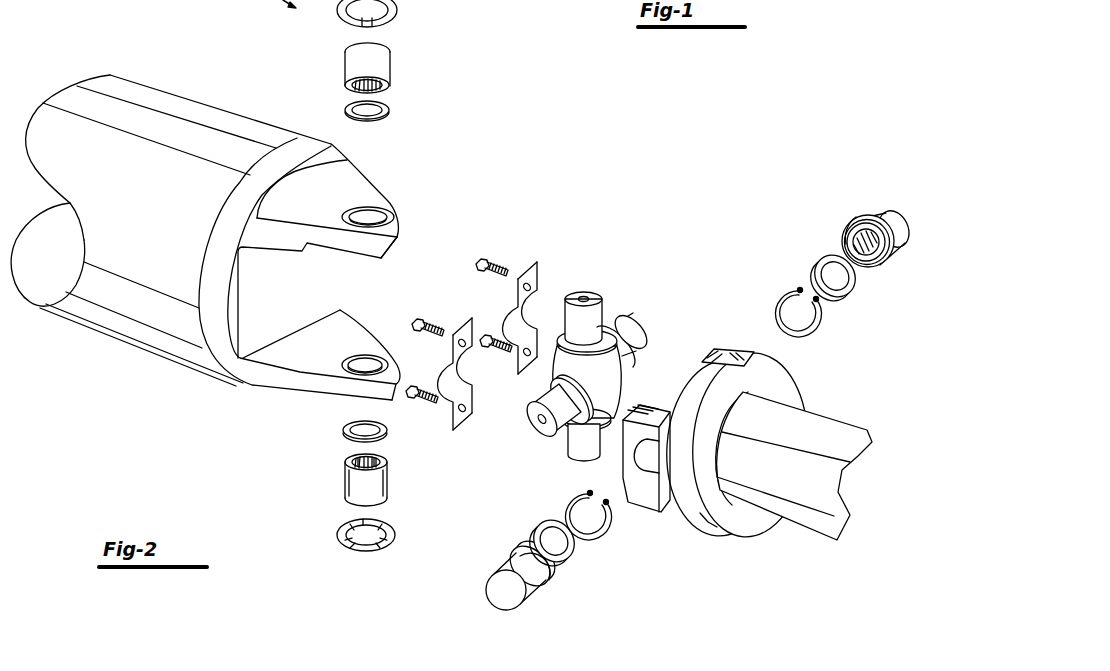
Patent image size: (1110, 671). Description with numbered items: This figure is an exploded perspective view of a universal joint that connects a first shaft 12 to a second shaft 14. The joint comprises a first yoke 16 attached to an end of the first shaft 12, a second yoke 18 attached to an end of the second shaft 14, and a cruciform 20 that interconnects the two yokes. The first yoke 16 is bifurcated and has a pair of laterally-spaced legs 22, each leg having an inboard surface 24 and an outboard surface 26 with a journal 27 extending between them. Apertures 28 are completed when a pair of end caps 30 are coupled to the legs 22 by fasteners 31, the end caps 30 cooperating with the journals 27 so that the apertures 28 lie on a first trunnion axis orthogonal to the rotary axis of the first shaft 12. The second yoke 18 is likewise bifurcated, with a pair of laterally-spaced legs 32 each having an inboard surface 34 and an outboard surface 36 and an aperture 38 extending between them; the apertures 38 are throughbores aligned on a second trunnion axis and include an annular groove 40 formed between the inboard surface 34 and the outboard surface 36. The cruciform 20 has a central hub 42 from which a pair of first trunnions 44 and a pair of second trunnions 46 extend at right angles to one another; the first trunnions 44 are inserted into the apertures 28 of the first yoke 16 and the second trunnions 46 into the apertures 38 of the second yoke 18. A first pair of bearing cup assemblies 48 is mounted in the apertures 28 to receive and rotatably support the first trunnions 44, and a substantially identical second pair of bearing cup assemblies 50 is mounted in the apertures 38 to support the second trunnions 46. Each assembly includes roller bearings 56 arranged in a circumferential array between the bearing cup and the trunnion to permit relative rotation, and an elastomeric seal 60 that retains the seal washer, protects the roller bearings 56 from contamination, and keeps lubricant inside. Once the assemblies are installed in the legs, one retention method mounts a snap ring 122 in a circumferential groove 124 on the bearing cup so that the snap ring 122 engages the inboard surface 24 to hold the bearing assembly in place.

The first shaft 12 is at (811, 420).
The second shaft 14 is at (163, 124).
The first yoke 16 is at (737, 430).
The second yoke 18 is at (278, 239).
The cruciform 20 is at (587, 366).
The legs 22 is at (708, 347).
The inboard surface 24 is at (702, 349).
The outboard surface 26 is at (718, 349).
The journal 27 is at (623, 470).
The apertures 28 is at (640, 467).
The end caps 30 is at (470, 324).
The fasteners 31 is at (418, 322).
The legs 32 is at (346, 247).
The inboard surface 34 is at (378, 377).
The outboard surface 36 is at (350, 190).
The apertures 38 is at (384, 222).
The annular groove 40 is at (383, 212).
The central hub 42 is at (607, 368).
The first trunnions 44 is at (628, 322).
The second trunnions 46 is at (600, 305).
The first bearing cup assemblies 48 is at (485, 587).
The second bearing cup assemblies 50 is at (391, 54).
The roller bearings 56 is at (358, 452).
The elastomeric seal 60 is at (391, 114).
The snap ring 122 is at (598, 540).
The circumferential groove 124 is at (540, 590).